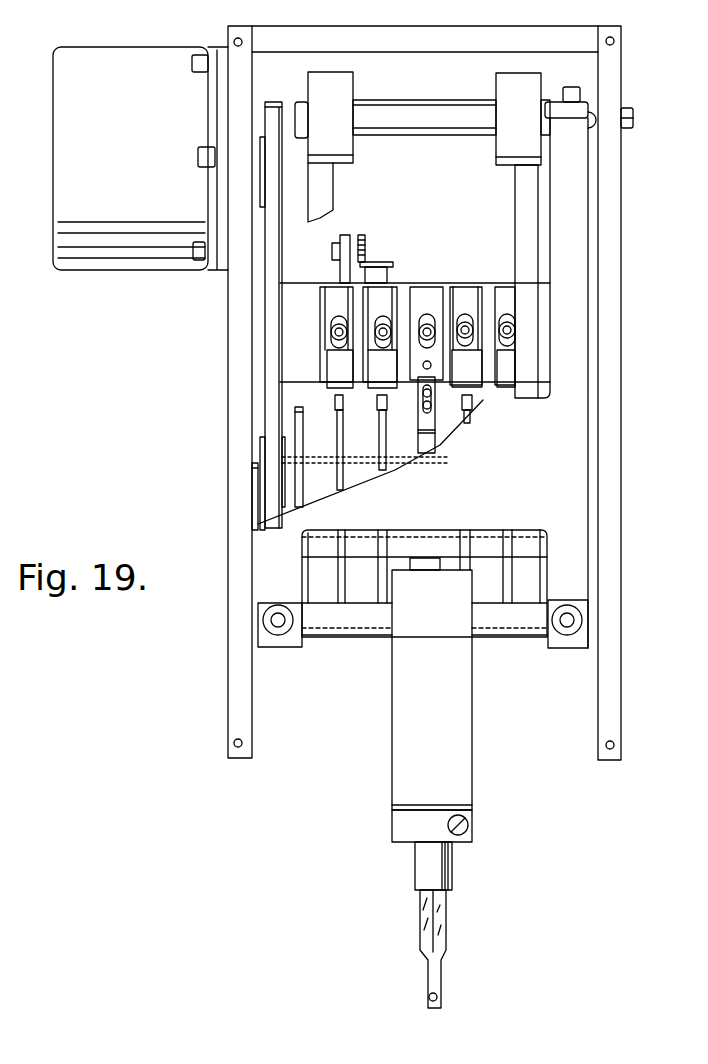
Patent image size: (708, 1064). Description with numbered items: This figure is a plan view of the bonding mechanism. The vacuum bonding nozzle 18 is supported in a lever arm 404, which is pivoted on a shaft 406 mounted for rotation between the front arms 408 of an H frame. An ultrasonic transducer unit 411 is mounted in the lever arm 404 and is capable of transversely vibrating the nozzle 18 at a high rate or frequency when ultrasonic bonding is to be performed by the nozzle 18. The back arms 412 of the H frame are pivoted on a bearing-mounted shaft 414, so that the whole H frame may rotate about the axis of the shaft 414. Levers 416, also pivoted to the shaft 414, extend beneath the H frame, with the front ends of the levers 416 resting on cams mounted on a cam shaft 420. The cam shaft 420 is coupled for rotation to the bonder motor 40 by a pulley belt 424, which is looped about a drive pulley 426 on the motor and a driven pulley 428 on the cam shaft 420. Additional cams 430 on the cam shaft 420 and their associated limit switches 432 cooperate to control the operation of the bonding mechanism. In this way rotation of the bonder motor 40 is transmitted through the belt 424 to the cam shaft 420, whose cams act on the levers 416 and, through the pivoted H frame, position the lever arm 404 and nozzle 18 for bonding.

The bonder motor 40 is at (121, 134).
The shaft 414 is at (419, 136).
The levers 416 is at (527, 221).
The back arms 412 is at (572, 200).
The drive pulley 426 is at (282, 193).
The pulley belt 424 is at (227, 373).
The driven pulley 428 is at (258, 446).
The limit switches 432 is at (380, 365).
The additional cams 430 is at (345, 413).
The cam shaft 420 is at (360, 470).
The shaft 406 is at (498, 636).
The front arms 408 is at (292, 644).
The lever arm 404 is at (470, 762).
The ultrasonic transducer unit 411 is at (443, 880).
The vacuum bonding nozzle 18 is at (438, 998).